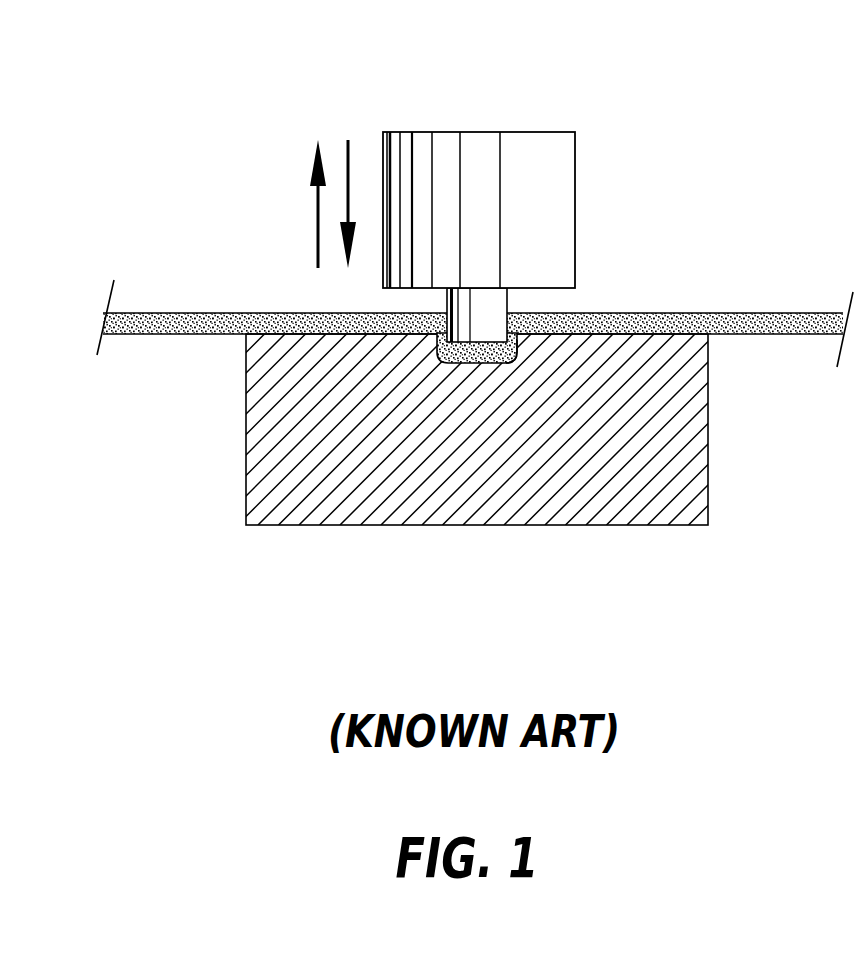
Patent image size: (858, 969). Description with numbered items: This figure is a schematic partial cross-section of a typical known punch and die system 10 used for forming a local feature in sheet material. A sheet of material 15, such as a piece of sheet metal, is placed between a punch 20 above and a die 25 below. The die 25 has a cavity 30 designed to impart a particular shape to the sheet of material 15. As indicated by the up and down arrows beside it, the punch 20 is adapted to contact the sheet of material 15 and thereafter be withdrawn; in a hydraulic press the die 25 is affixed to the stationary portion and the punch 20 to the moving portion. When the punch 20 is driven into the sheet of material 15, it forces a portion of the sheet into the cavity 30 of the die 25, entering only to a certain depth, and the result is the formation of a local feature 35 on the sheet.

The punch and die system 10 is at (120, 114).
The sheet of material 15 is at (168, 334).
The punch 20 is at (508, 302).
The die 25 is at (697, 461).
The cavity 30 is at (458, 365).
The local feature 35 is at (507, 368).